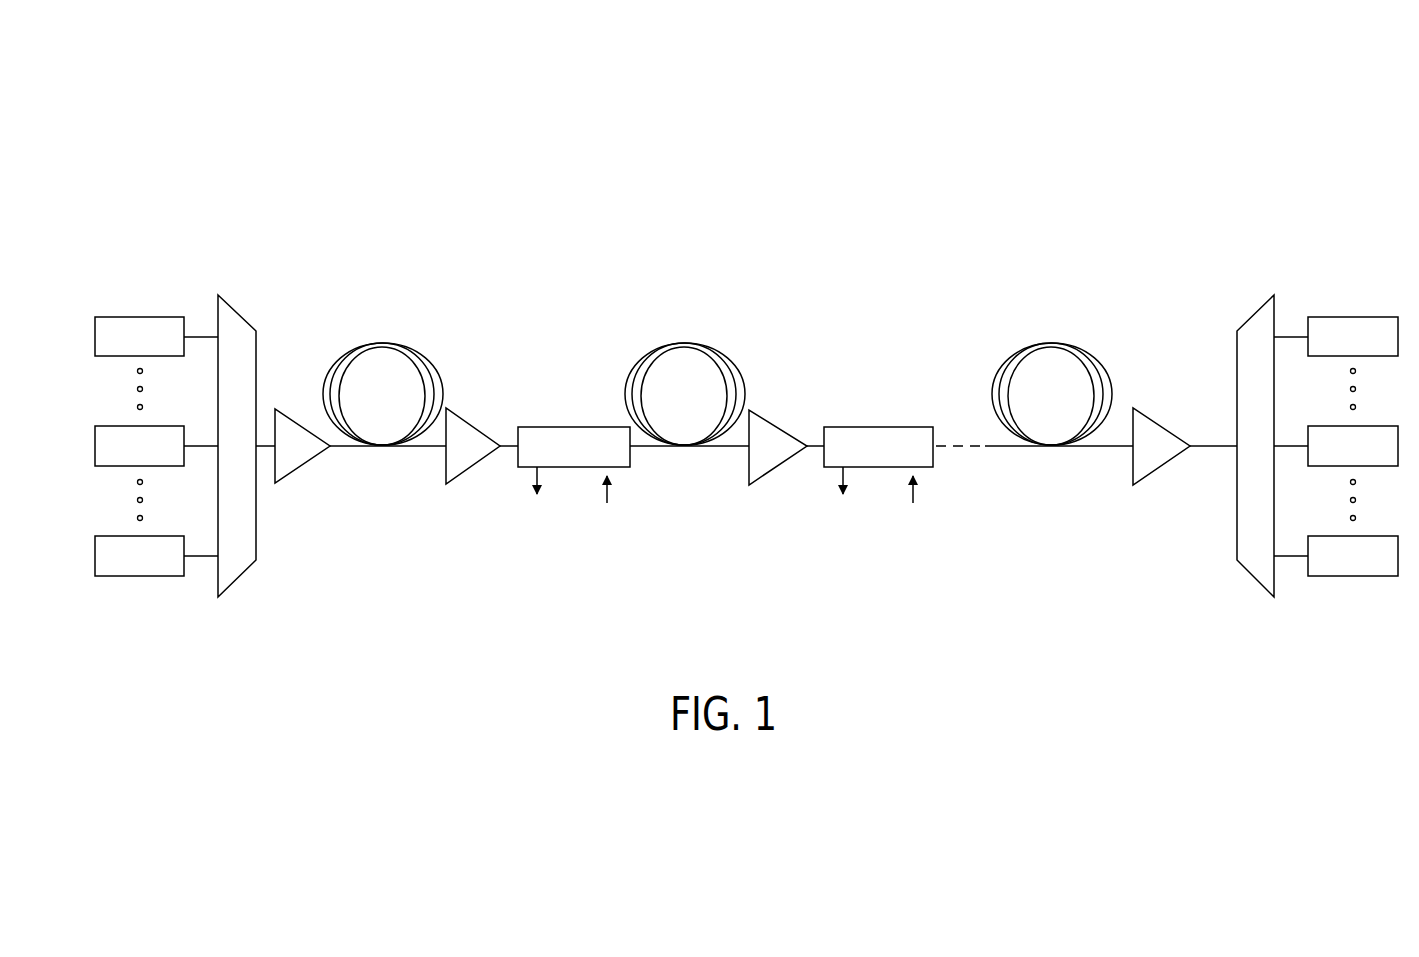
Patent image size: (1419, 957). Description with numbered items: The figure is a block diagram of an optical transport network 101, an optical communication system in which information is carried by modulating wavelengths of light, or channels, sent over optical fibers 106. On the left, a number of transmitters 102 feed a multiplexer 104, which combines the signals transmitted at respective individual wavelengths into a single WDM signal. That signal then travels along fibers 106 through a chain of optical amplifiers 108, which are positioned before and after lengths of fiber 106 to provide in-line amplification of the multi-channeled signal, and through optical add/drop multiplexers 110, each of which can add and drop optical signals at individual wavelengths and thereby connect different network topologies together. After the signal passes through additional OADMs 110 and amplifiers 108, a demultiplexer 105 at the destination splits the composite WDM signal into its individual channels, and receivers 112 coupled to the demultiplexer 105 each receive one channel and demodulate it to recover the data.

The optical transport network 101 is at (169, 136).
The transmitter 102 is at (136, 317).
The multiplexer 104 is at (235, 305).
The demultiplexer 105 is at (1254, 309).
The optical fiber 106 is at (378, 343).
The optical amplifier 108 is at (296, 471).
The optical add/drop multiplexer 110 is at (558, 427).
The receiver 112 is at (1370, 317).